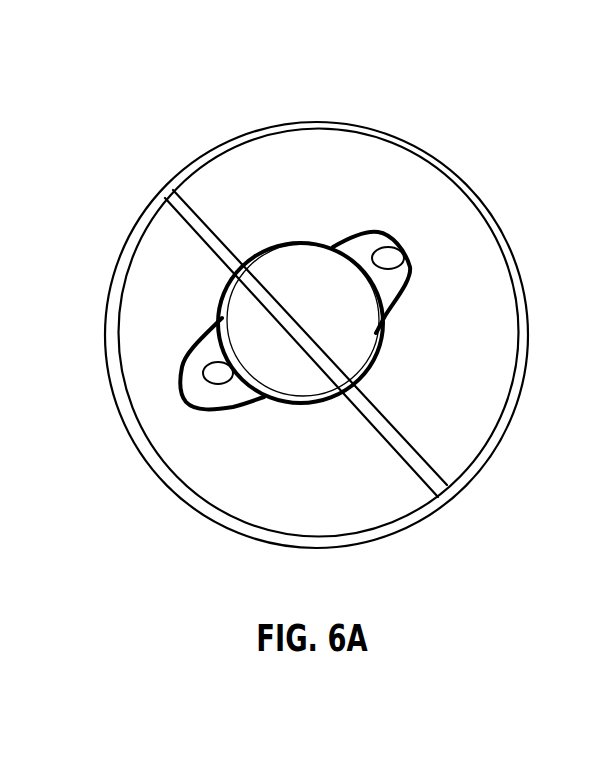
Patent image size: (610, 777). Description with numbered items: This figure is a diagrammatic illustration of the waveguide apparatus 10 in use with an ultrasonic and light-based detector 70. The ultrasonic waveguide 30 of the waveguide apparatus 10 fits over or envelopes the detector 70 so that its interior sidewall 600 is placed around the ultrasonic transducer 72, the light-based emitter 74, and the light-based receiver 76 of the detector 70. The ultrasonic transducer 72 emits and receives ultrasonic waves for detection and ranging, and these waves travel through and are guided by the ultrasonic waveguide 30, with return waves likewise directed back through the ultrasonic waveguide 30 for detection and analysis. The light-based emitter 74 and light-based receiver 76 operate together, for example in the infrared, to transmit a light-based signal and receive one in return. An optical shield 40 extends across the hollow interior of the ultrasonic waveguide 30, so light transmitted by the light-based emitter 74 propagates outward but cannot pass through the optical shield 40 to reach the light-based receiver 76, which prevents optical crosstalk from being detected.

The waveguide apparatus 10 is at (538, 58).
The ultrasonic waveguide 30 is at (167, 573).
The optical shield 40 is at (190, 224).
The ultrasonic and light-based detector 70 is at (343, 178).
The ultrasonic transducer 72 is at (284, 272).
The light-based emitter 74 is at (93, 430).
The light-based receiver 76 is at (548, 345).
The interior sidewall 600 is at (296, 455).